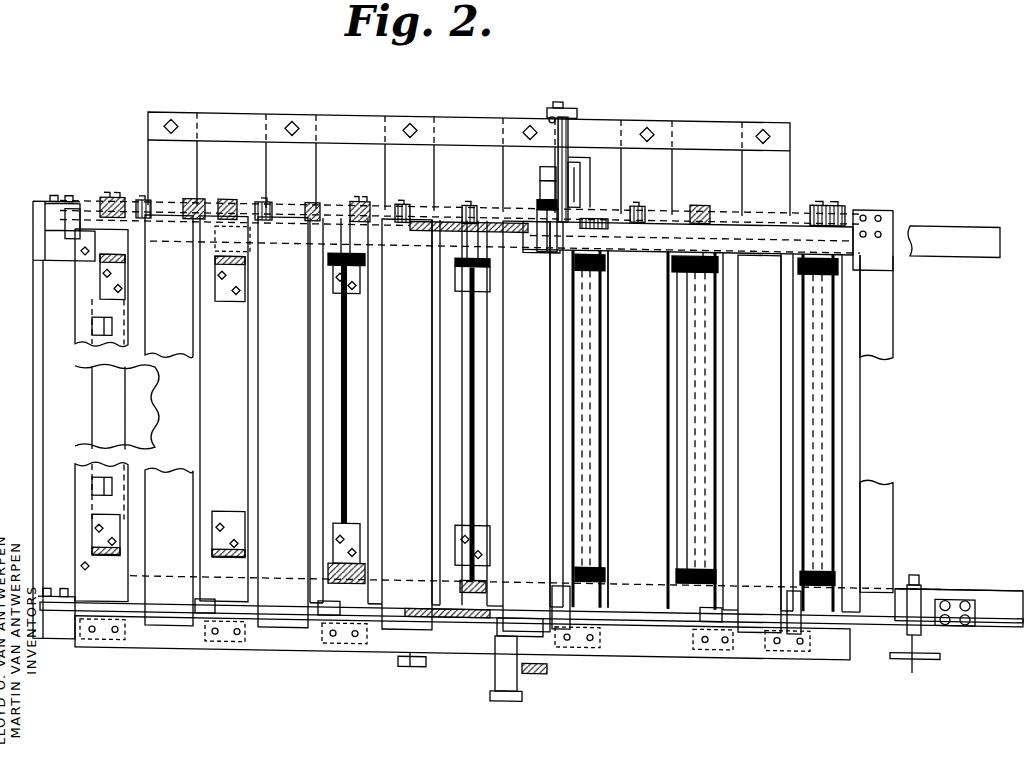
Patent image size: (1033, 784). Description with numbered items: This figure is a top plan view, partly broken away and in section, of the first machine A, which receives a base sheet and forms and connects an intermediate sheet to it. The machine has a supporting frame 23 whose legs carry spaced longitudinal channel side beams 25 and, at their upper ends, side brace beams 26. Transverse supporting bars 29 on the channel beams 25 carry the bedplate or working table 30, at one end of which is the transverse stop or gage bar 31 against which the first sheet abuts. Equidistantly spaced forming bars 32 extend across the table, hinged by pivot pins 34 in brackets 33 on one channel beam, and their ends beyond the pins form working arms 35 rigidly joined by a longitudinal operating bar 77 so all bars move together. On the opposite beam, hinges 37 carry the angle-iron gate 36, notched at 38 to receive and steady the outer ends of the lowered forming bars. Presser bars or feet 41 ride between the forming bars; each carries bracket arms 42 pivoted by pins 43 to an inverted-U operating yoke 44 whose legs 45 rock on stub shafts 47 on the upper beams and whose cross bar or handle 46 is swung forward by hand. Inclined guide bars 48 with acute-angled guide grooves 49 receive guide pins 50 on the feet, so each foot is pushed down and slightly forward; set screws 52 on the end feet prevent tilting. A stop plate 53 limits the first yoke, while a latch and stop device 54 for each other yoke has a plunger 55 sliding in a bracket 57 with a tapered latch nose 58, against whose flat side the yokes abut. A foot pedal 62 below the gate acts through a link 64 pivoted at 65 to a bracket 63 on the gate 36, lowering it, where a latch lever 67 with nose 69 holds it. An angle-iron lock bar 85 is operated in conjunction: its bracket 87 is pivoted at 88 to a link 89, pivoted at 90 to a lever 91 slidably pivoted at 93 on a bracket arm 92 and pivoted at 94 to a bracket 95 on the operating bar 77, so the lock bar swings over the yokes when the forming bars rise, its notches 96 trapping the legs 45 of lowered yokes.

The supporting frame 23 is at (965, 576).
The side beams 25 is at (896, 252).
The side brace beams 26 is at (416, 230).
The supporting bars 29 is at (100, 438).
The bedplate or working table 30 is at (176, 408).
The stop or gage bar 31 is at (92, 340).
The forming bars 32 is at (271, 338).
The brackets 33 is at (200, 198).
The pivot pins 34 is at (228, 200).
The working arms 35 is at (236, 152).
The gate 36 is at (655, 648).
The hinges 37 is at (304, 640).
The notches 38 is at (146, 630).
The presser bars or feet 41 is at (573, 390).
The bracket arms 42 is at (328, 292).
The pivot pins 43 is at (348, 402).
The operating yoke 44 is at (328, 256).
The legs 45 is at (370, 272).
The cross bar or handle 46 is at (694, 336).
The stub shafts 47 is at (476, 329).
The guide bars 48 is at (143, 200).
The guide grooves 49 is at (112, 198).
The guide pins 50 is at (98, 224).
The set screws 52 is at (90, 250).
The stop plate 53 is at (56, 249).
The latch and stop device 54 is at (552, 590).
The latch plunger 55 is at (903, 644).
The brackets 57 is at (921, 575).
The tapered latch nose 58 is at (914, 564).
The foot pedal 62 is at (543, 666).
The bracket 63 is at (505, 686).
The link 64 is at (517, 690).
The pivot 65 is at (492, 680).
The latch lever 67 is at (420, 670).
The latch nose 69 is at (400, 664).
The operating bar 77 is at (712, 118).
The lock bar 85 is at (640, 241).
The bracket 87 is at (544, 184).
The pivot 88 is at (537, 198).
The link 89 is at (555, 171).
The pivot 90 is at (558, 208).
The lever 91 is at (570, 128).
The bracket arm 92 is at (579, 172).
The pivot 93 is at (594, 174).
The pivot 94 is at (554, 100).
The bracket 95 is at (547, 112).
The notches 96 is at (607, 255).
The first machine A is at (818, 206).